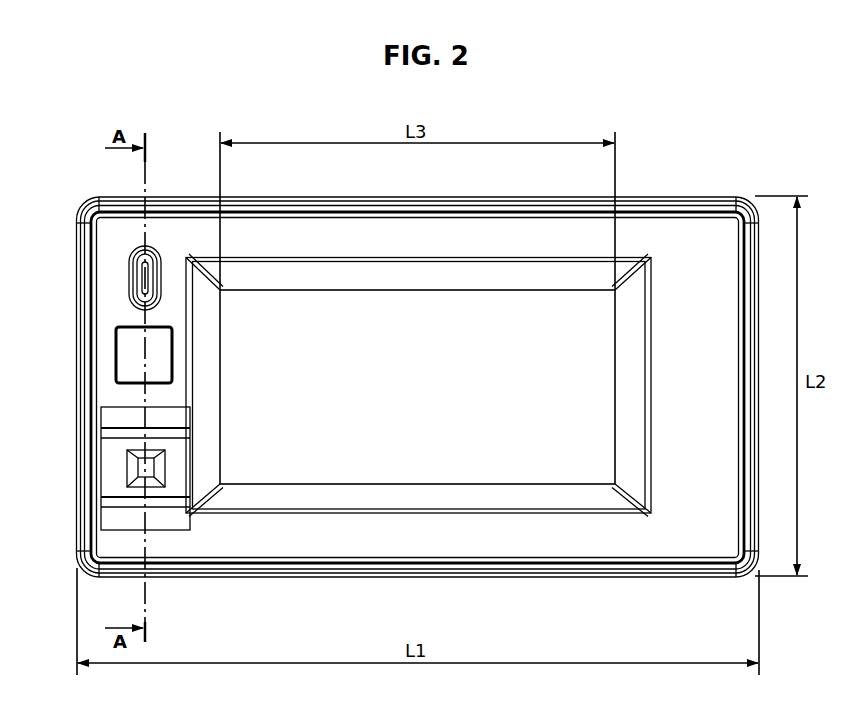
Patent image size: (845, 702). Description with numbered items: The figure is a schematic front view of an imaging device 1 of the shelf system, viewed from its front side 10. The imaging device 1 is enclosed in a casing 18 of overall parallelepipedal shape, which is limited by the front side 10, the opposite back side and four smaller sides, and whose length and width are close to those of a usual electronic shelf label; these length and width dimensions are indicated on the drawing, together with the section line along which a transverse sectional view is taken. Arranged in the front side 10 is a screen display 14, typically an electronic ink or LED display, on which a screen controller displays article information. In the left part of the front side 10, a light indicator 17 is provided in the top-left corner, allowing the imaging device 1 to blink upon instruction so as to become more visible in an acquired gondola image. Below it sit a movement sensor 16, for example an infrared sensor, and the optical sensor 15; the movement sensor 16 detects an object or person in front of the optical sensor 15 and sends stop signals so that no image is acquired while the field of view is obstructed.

The imaging device 1 is at (482, 110).
The front side 10 is at (707, 392).
The screen display 14 is at (427, 392).
The optical sensor 15 is at (121, 468).
The movement sensor 16 is at (115, 355).
The light indicator 17 is at (126, 278).
The casing 18 is at (666, 190).